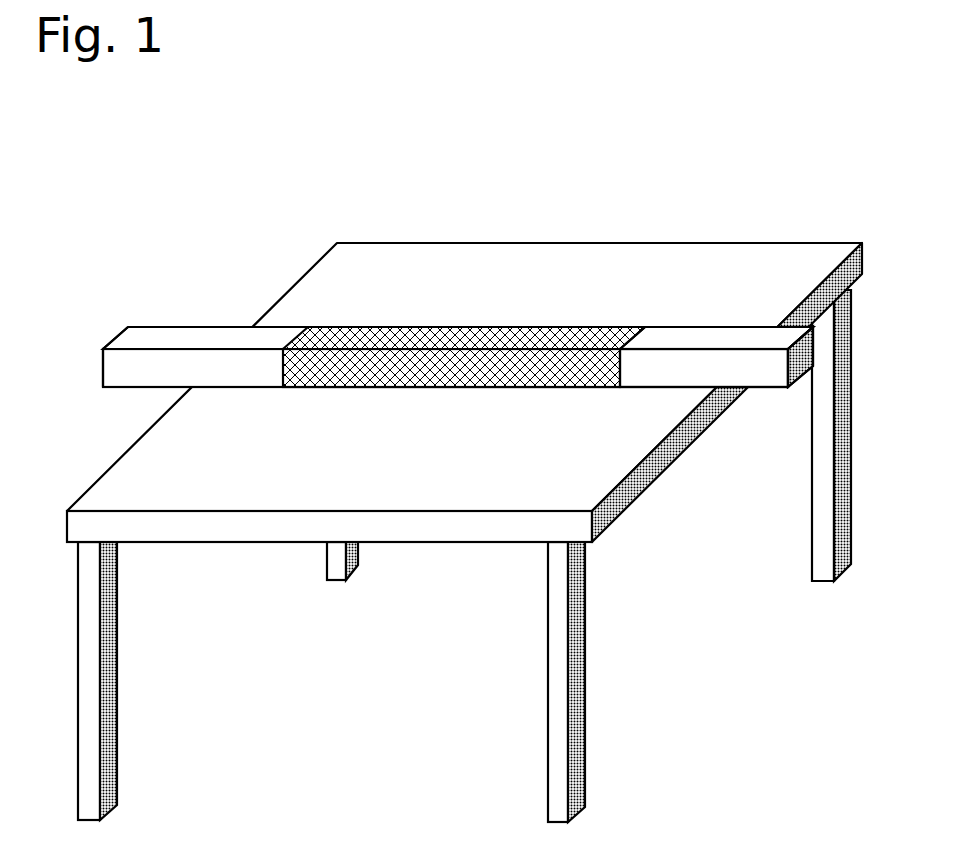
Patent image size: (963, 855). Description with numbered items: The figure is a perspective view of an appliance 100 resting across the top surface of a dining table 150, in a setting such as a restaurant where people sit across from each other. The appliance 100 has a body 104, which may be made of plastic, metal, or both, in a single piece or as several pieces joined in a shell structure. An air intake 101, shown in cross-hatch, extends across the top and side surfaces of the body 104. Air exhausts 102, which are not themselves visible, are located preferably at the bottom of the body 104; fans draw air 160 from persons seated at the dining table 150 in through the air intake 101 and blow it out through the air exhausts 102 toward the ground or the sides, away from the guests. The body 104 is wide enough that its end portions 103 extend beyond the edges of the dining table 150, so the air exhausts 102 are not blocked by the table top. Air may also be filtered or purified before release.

The appliance 100 is at (431, 336).
The air intake 101 is at (358, 332).
The air exhaust 102 is at (118, 408).
The end portion 103 is at (107, 329).
The body 104 is at (662, 314).
The dining table 150 is at (503, 474).
The air 160 is at (479, 313).